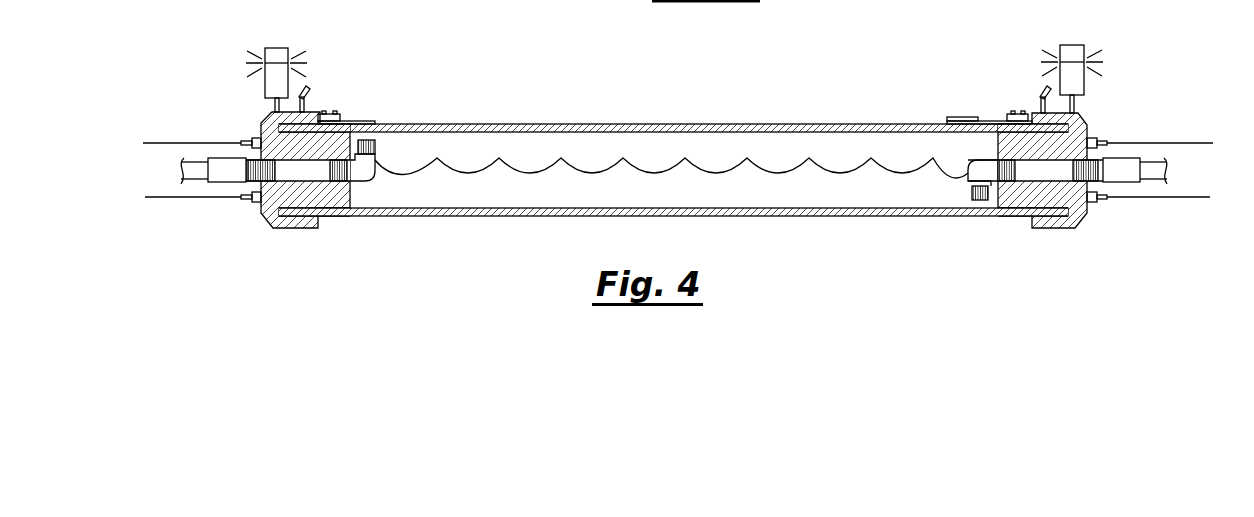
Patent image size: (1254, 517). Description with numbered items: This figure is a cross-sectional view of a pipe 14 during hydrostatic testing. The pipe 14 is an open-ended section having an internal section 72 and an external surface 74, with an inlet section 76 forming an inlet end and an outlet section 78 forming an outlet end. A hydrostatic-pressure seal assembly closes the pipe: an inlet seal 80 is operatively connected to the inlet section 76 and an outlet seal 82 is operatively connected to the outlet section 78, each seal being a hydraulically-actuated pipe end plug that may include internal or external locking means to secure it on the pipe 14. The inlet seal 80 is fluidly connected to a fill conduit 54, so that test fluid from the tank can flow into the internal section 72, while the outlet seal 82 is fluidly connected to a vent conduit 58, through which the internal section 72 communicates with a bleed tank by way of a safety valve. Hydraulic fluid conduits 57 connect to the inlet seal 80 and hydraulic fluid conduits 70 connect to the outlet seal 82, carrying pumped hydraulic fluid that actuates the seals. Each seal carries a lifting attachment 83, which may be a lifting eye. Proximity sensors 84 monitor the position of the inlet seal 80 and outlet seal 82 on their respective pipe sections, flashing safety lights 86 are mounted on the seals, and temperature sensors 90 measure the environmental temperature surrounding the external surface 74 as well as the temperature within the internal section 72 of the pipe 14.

The pipe 14 is at (673, 137).
The fill conduit 54 is at (1120, 172).
The hydraulic fluid conduits 57 is at (1185, 143).
The vent conduit 58 is at (221, 178).
The hydraulic fluid conduits 70 is at (168, 142).
The internal section 72 is at (801, 128).
The external surface 74 is at (538, 124).
The inlet section 76 is at (1040, 209).
The outlet section 78 is at (304, 207).
The inlet seal 80 is at (1075, 128).
The outlet seal 82 is at (271, 122).
The lifting attachment 83 is at (309, 90).
The proximity sensors 84 is at (330, 112).
The flashing safety lights 86 is at (275, 50).
The temperature sensors 90 is at (953, 116).